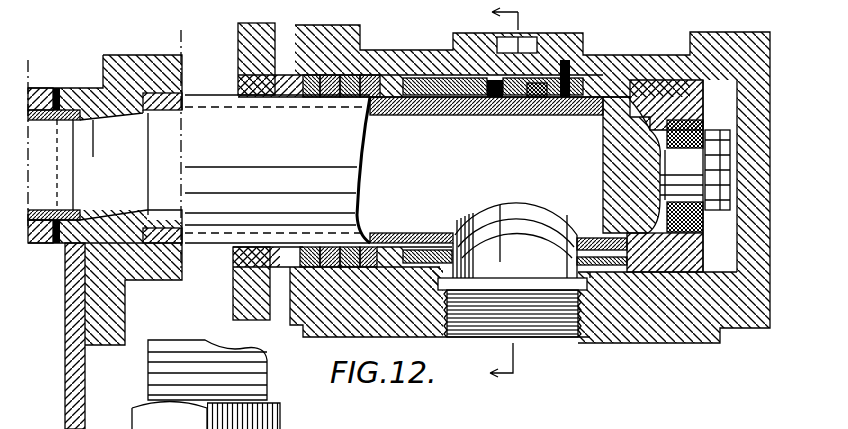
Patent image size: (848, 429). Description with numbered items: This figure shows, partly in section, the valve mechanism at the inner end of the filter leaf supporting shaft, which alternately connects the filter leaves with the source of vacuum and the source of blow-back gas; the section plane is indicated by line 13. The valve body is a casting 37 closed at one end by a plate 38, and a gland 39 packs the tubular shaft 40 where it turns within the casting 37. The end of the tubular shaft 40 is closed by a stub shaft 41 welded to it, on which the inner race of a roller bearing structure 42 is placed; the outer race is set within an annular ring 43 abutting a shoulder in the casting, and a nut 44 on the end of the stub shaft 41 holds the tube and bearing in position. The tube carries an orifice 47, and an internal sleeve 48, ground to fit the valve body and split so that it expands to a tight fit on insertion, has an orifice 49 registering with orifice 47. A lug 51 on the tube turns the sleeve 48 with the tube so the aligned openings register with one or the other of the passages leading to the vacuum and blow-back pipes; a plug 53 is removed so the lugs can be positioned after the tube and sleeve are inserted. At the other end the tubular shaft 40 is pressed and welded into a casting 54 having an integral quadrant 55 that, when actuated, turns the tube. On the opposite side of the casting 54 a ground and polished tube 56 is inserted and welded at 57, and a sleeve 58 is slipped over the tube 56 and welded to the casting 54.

The section line 13 is at (520, 200).
The casting 37 is at (668, 343).
The plate 38 is at (771, 228).
The gland 39 is at (238, 28).
The tubular shaft 40 is at (215, 95).
The stub shaft 41 is at (610, 146).
The roller bearing structure 42 is at (705, 135).
The annular ring 43 is at (672, 88).
The nut 44 is at (720, 170).
The orifice 47 is at (524, 205).
The internal sleeve 48 is at (603, 272).
The orifice 49 is at (463, 225).
The lug 51 is at (583, 55).
The plug 53 is at (484, 40).
The casting 54 is at (138, 60).
The quadrant 55 is at (68, 410).
The ground and polished tube 56 is at (40, 243).
The weld 57 is at (70, 90).
The sleeve 58 is at (40, 88).